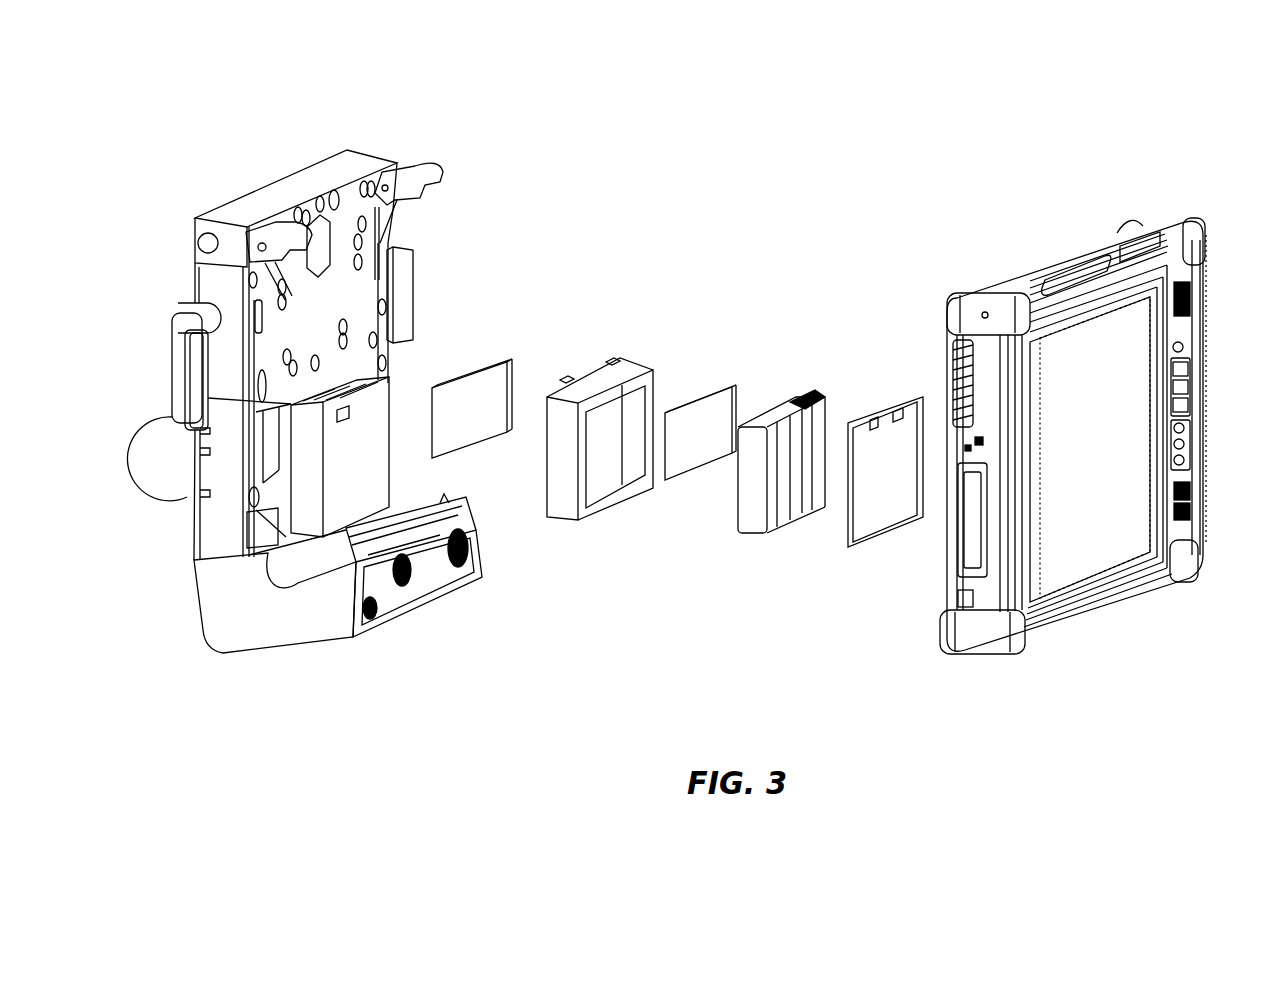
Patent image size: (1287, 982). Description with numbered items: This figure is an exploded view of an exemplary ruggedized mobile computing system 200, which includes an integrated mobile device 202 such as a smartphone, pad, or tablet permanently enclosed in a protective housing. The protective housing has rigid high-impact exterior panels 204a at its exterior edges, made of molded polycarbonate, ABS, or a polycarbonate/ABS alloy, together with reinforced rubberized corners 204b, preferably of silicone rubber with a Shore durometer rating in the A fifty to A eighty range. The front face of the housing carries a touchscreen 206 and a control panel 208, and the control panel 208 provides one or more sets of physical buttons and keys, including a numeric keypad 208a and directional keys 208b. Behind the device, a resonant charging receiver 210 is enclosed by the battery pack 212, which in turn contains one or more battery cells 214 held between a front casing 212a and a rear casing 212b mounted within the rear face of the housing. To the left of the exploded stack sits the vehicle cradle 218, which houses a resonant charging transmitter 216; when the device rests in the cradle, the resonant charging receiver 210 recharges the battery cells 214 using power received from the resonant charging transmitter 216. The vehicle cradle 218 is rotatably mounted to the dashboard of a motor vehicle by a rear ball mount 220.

The ruggedized mobile computing system 200 is at (190, 168).
The integrated mobile device 202 is at (1108, 600).
The rigid high-impact exterior panels 204a is at (1060, 253).
The reinforced rubberized corners 204b is at (957, 295).
The touchscreen 206 is at (1085, 520).
The control panel 208 is at (1147, 403).
The numeric keypad 208a is at (1188, 395).
The directional keys 208b is at (1192, 445).
The resonant charging receiver 210 is at (712, 403).
The battery pack 212 is at (370, 468).
The front casing 212a is at (597, 483).
The rear casing 212b is at (890, 430).
The battery cells 214 is at (753, 488).
The resonant charging transmitter 216 is at (467, 420).
The vehicle cradle 218 is at (248, 625).
The rear ball mount 220 is at (173, 470).